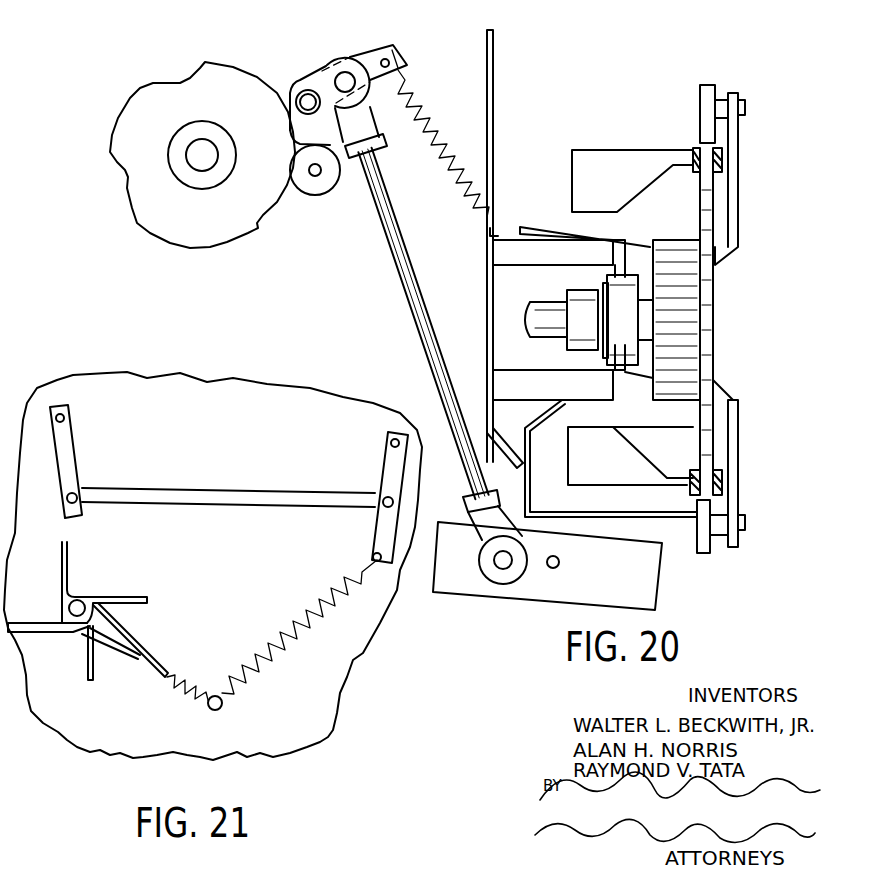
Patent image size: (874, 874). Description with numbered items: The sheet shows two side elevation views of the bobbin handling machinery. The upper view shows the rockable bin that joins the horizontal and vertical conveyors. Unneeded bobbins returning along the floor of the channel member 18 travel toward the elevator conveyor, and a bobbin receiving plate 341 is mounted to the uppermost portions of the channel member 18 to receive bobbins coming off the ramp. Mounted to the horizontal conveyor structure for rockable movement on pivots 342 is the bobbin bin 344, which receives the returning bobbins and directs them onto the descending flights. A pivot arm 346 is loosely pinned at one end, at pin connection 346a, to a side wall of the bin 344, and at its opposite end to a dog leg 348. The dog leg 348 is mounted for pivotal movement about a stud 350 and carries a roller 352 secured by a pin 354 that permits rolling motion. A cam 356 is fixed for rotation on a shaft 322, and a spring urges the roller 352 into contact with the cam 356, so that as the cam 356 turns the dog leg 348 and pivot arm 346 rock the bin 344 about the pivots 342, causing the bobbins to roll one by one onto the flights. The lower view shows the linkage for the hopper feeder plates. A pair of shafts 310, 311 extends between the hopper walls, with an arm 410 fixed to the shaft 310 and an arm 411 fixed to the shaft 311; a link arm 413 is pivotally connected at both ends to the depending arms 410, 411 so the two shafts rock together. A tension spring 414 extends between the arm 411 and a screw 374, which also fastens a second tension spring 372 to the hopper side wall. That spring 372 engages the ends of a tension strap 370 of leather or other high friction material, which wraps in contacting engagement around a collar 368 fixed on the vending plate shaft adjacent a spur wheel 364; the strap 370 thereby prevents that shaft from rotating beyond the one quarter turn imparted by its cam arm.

In FIG. 20, the channel member 18 is at (678, 518).
In FIG. 21, the shaft 310 is at (64, 418).
In FIG. 21, the shaft 311 is at (391, 443).
In FIG. 20, the shaft 322 is at (198, 147).
In FIG. 20, the bobbin receiving plate 341 is at (535, 226).
In FIG. 20, the pivots 342 is at (558, 567).
In FIG. 20, the bobbin bin 344 is at (452, 584).
In FIG. 20, the pivot arm 346 is at (410, 272).
In FIG. 20, the pin connection 346a is at (505, 566).
In FIG. 20, the dog leg 348 is at (386, 58).
In FIG. 20, the stud 350 is at (311, 90).
In FIG. 20, the roller 352 is at (309, 186).
In FIG. 20, the pin 354 is at (320, 174).
In FIG. 20, the cam 356 is at (200, 240).
In FIG. 21, the spur wheel 364 is at (128, 595).
In FIG. 21, the collar 368 is at (69, 608).
In FIG. 21, the tension strap 370 is at (140, 678).
In FIG. 21, the tension spring 372 is at (200, 690).
In FIG. 21, the screw 374 is at (222, 712).
In FIG. 21, the arm 410 is at (70, 482).
In FIG. 21, the arm 411 is at (388, 478).
In FIG. 21, the arm 413 is at (210, 500).
In FIG. 21, the tension spring 414 is at (277, 632).